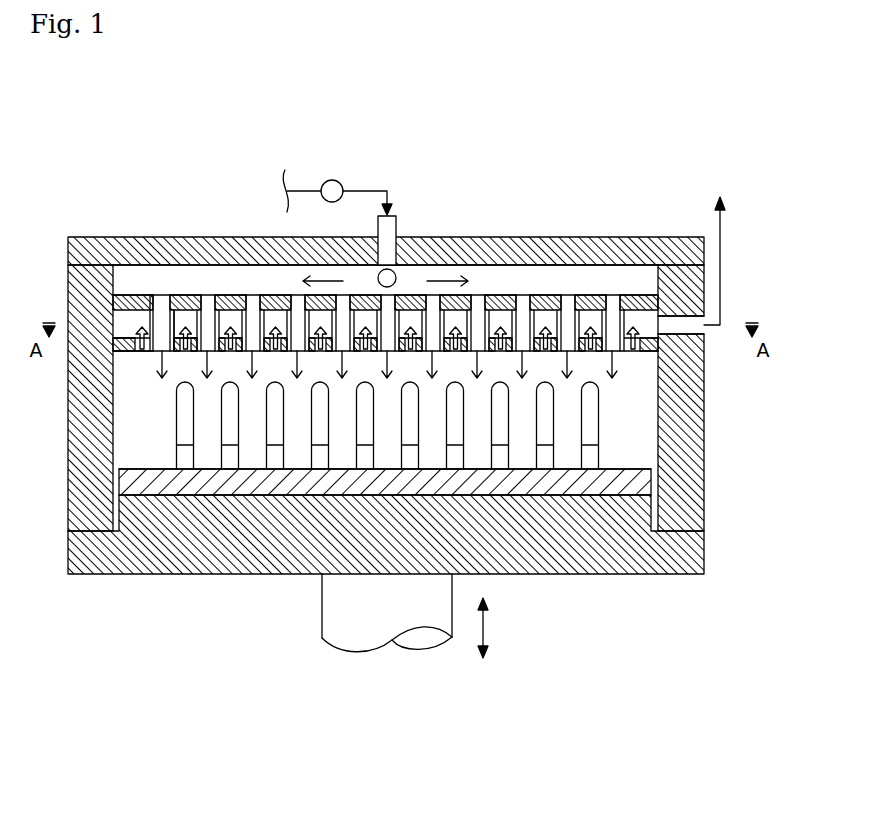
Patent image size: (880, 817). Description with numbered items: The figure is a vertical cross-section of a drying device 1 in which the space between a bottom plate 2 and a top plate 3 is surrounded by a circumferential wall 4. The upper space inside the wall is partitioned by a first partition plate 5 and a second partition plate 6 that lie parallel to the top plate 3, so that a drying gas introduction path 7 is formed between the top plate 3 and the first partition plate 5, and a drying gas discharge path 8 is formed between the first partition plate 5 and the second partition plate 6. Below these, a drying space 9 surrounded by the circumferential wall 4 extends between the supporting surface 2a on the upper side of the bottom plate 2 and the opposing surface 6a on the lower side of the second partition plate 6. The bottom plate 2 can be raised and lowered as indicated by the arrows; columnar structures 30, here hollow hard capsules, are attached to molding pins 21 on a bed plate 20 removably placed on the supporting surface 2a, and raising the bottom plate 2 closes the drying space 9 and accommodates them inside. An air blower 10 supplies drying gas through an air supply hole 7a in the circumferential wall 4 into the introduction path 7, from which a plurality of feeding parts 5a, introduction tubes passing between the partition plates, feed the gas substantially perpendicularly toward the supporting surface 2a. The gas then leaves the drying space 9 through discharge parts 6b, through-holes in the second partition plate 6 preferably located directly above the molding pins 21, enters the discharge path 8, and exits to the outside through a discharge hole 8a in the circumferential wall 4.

The drying device 1 is at (563, 160).
The bottom plate 2 is at (603, 555).
The supporting surface 2a is at (143, 494).
The top plate 3 is at (473, 247).
The circumferential wall 4 is at (80, 437).
The first partition plate 5 is at (142, 300).
The feeding parts 5a is at (176, 318).
The second partition plate 6 is at (125, 338).
The opposing surface 6a is at (123, 353).
The discharge parts 6b is at (192, 342).
The drying gas introduction path 7 is at (597, 283).
The air supply hole 7a is at (394, 276).
The drying gas discharge path 8 is at (648, 323).
The discharge hole 8a is at (681, 322).
The drying space 9 is at (637, 398).
The air blower 10 is at (330, 186).
The bed plate 20 is at (638, 483).
The molding pins 21 is at (592, 455).
The columnar structures 30 is at (590, 415).